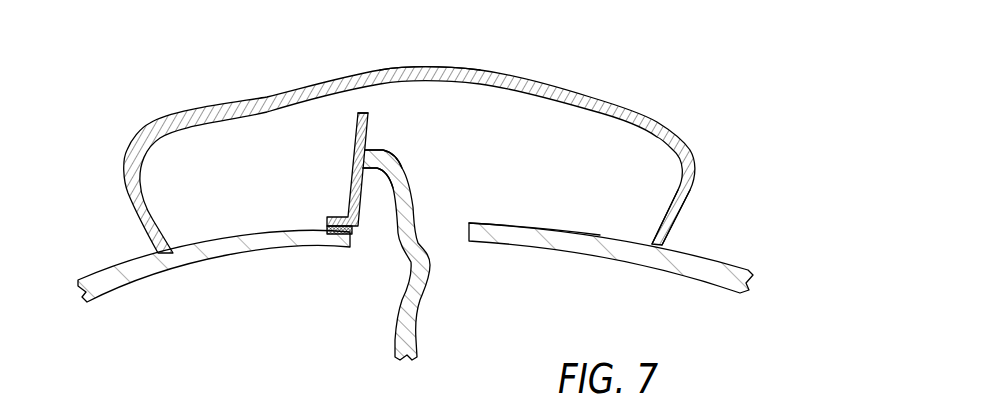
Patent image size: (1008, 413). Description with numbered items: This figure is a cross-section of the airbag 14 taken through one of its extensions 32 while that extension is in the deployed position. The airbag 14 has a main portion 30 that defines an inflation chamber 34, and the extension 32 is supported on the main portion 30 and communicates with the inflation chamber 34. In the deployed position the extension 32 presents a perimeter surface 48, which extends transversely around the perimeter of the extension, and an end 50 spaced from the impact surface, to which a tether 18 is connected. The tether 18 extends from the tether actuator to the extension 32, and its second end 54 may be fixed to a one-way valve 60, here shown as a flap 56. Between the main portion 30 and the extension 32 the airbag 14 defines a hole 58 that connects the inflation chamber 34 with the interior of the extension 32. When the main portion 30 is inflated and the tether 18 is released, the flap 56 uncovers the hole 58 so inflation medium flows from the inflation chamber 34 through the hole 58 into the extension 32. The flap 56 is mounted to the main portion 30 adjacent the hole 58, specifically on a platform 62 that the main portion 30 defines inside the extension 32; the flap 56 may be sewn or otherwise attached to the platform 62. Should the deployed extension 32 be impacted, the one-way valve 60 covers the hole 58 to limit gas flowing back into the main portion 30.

The airbag 14 is at (688, 82).
The tether 18 is at (393, 333).
The main portion 30 is at (728, 272).
The extension 32 is at (543, 88).
The inflation chamber 34 is at (237, 323).
The perimeter surface 48 is at (680, 220).
The end 50 is at (433, 66).
The second end 54 is at (367, 148).
The flap 56 is at (348, 177).
The hole 58 is at (352, 233).
The one-way valve 60 is at (340, 145).
The platform 62 is at (533, 242).